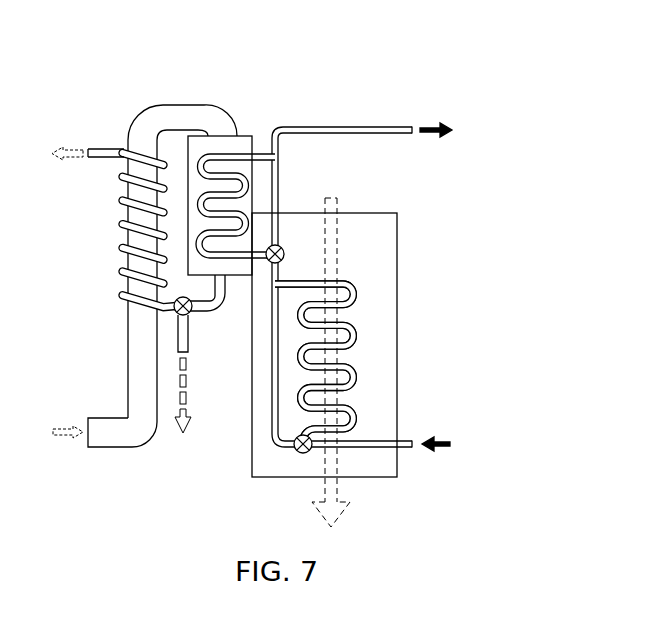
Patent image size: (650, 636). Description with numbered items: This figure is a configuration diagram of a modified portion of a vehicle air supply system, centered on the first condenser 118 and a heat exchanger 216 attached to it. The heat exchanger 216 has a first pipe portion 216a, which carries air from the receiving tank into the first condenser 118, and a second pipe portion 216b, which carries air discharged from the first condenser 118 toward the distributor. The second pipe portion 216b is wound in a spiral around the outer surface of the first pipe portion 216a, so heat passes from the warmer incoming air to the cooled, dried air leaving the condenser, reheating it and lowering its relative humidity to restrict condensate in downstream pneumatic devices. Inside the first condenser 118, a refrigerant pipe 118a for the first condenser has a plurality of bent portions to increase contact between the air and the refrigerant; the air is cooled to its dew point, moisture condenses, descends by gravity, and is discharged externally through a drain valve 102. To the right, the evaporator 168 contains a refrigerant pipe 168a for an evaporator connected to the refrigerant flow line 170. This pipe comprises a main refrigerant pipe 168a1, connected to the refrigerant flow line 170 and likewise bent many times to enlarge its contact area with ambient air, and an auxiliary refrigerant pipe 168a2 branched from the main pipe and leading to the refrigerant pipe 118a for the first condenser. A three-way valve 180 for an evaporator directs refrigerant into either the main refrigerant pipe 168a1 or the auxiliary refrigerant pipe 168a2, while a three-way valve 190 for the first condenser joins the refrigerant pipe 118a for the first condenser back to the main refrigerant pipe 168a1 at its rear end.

The heat exchanger 216 is at (150, 71).
The first pipe portion 216a is at (150, 112).
The second pipe portion 216b is at (107, 151).
The first condenser 118 is at (231, 175).
The refrigerant pipe for the first condenser 118a is at (222, 152).
The refrigerant flow line 170 is at (280, 185).
The evaporator 168 is at (382, 345).
The refrigerant pipe for an evaporator 168a is at (393, 334).
The main refrigerant pipe 168a1 is at (278, 225).
The auxiliary refrigerant pipe 168a2 is at (278, 335).
The 3-way valve for the first condenser 190 is at (268, 262).
The drain valve 102 is at (191, 314).
The 3-way valve for an evaporator 180 is at (303, 453).